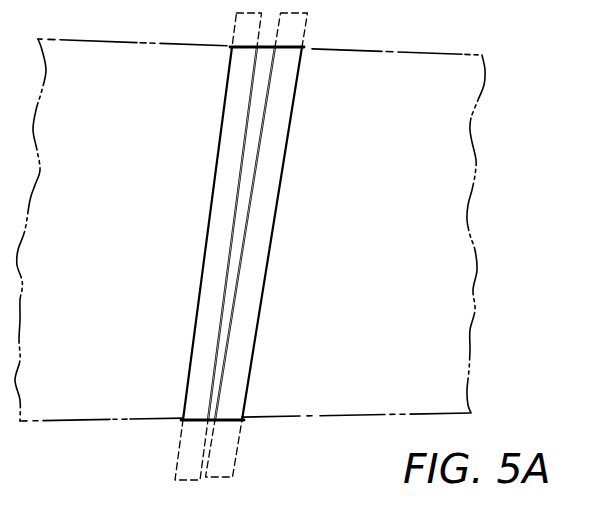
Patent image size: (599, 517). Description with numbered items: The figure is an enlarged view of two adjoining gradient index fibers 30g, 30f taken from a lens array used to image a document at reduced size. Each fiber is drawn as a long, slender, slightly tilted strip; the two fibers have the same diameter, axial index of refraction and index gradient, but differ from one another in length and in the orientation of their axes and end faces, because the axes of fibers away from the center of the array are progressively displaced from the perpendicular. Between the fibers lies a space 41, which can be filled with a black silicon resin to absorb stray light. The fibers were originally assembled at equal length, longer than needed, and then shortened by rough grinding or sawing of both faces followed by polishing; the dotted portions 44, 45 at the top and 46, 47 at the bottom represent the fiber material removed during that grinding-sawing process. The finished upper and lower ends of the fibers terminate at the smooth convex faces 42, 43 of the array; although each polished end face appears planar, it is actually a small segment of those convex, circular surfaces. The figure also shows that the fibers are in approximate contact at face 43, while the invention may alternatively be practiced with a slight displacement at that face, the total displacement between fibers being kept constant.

The gradient index fiber 30g is at (226, 157).
The gradient index fiber 30f is at (278, 160).
The space between fibers 41 is at (264, 77).
The convex face 42 is at (247, 49).
The convex face 43 is at (229, 418).
The removed fiber portion 44 is at (234, 31).
The removed fiber portion 45 is at (305, 36).
The removed fiber portion 46 is at (177, 452).
The removed fiber portion 47 is at (236, 461).